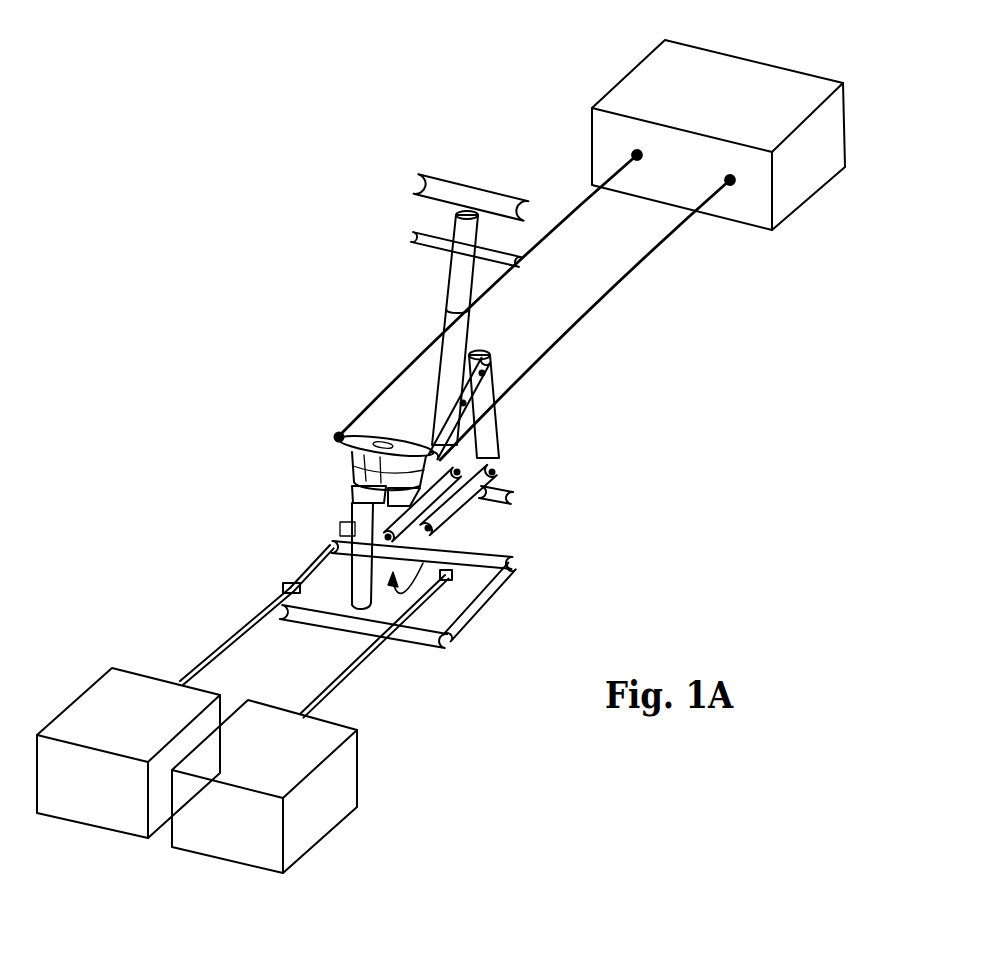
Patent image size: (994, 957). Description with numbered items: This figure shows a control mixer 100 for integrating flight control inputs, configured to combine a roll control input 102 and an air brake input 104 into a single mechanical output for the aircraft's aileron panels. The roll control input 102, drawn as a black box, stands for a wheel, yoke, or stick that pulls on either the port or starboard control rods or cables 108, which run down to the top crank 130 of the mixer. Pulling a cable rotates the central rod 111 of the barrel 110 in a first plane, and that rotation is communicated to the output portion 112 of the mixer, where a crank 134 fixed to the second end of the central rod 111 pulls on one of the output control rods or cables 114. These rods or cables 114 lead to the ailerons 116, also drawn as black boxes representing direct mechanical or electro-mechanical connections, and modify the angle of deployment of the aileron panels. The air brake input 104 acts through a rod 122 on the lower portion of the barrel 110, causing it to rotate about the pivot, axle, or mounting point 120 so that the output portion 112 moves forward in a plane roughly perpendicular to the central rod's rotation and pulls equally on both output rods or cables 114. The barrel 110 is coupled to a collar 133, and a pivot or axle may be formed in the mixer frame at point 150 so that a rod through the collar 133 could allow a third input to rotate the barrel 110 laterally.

The control mixer 100 is at (289, 134).
The roll control input 102 is at (720, 60).
The air brake input 104 is at (443, 277).
The control rods or cables 108 is at (570, 203).
The barrel 110 is at (355, 472).
The central rod 111 is at (495, 551).
The output portion 112 is at (462, 627).
The output control rods or cables 114 is at (222, 628).
The ailerons 116 is at (98, 665).
The pivot, axle, or mounting point 120 is at (355, 492).
The rod 122 is at (475, 497).
The top crank 130 is at (340, 437).
The collar 133 is at (335, 525).
The crank 134 is at (472, 600).
The point 150 is at (343, 528).